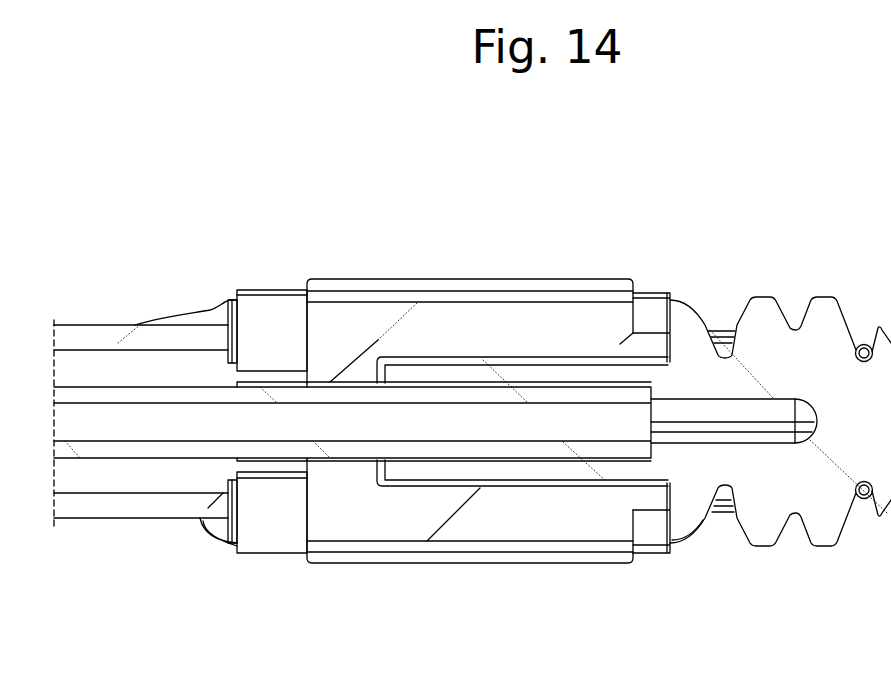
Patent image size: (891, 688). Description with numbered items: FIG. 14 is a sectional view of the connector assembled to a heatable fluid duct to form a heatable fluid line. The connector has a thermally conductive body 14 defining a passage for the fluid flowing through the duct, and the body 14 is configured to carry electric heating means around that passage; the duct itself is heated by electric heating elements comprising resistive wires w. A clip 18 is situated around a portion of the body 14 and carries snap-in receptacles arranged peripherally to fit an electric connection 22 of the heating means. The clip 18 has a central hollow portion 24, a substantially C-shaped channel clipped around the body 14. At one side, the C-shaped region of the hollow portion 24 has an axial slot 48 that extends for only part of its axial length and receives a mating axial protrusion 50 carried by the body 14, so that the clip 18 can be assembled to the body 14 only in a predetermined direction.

The thermally conductive body 14 is at (826, 562).
The clip 18 is at (398, 268).
The electric connection 22 is at (680, 320).
The central hollow portion 24 is at (332, 394).
The axial slot 48 is at (441, 366).
The axial protrusion 50 is at (537, 373).
The resistive wires w is at (724, 312).